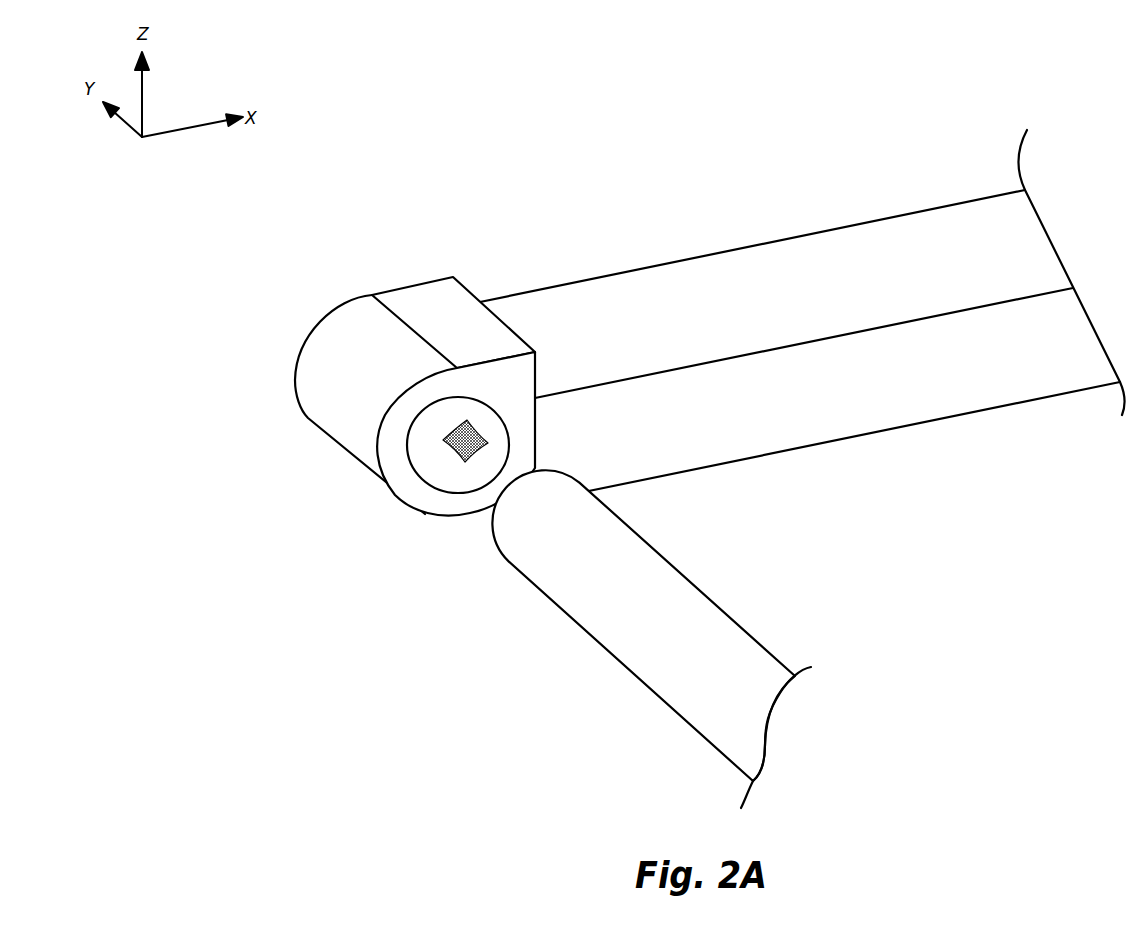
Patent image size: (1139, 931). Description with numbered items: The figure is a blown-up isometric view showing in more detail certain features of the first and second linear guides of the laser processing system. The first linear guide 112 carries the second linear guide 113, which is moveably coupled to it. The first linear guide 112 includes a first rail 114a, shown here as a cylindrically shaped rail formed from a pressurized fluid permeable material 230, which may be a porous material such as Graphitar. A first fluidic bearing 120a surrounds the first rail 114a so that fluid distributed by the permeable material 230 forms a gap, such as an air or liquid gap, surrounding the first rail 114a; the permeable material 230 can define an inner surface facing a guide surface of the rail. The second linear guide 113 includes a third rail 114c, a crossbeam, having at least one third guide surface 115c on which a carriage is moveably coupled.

The first linear guide 112 is at (606, 639).
The second linear guide 113 is at (802, 316).
The first rail 114a is at (547, 580).
The third rail 114c is at (870, 417).
The third guide surface 115c is at (755, 295).
The first fluidic bearing 120a is at (415, 400).
The pressurized fluid permeable material 230 is at (463, 457).